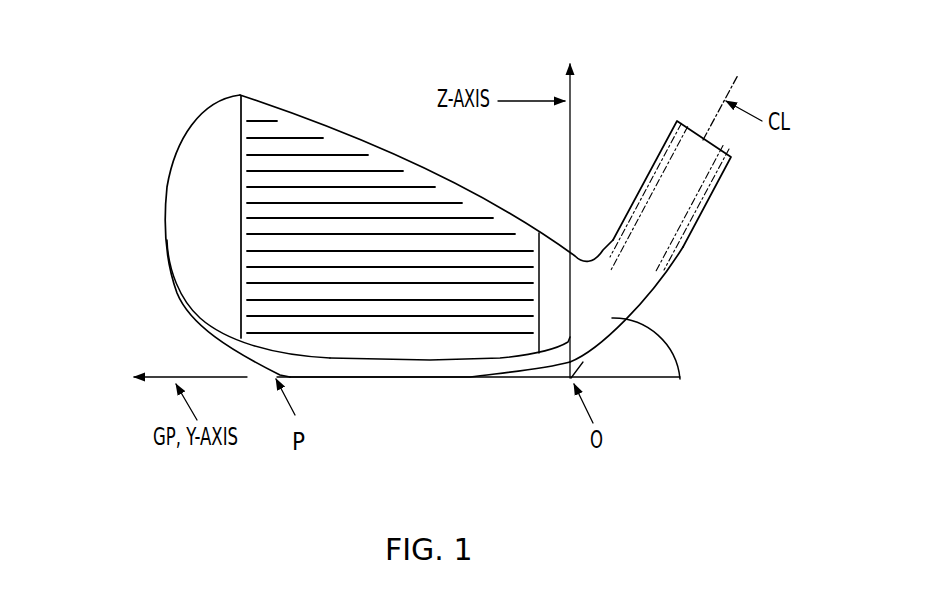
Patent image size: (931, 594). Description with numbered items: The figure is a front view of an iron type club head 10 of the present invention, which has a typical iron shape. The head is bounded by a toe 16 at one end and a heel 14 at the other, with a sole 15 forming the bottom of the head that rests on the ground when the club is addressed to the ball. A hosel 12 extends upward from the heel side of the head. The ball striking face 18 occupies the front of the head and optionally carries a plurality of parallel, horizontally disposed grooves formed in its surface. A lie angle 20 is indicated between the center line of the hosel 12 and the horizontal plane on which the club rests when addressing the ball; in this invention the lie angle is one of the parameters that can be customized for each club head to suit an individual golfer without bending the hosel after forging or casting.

The club head 10 is at (387, 108).
The hosel 12 is at (727, 166).
The heel 14 is at (679, 297).
The sole 15 is at (391, 379).
The toe 16 is at (152, 231).
The ball striking face 18 is at (365, 203).
The lie angle 20 is at (679, 361).